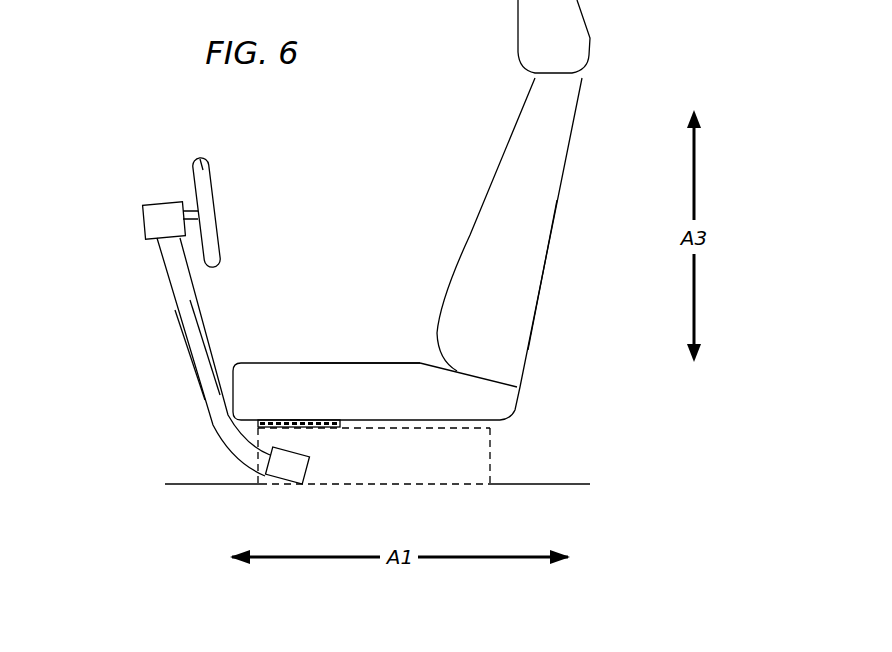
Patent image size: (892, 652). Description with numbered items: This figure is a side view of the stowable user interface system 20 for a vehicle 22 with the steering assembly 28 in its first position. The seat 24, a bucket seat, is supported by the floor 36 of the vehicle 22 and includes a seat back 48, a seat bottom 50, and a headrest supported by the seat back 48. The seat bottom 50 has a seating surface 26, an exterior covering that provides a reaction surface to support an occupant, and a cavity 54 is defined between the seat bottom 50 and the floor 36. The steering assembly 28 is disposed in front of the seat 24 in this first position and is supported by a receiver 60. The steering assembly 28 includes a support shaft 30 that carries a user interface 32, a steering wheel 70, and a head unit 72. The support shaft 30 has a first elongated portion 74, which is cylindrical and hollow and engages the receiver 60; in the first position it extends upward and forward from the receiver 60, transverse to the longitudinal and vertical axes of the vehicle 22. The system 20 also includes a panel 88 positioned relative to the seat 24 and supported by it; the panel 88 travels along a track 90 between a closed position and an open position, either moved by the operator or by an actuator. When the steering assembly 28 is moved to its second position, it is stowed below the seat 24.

The stowable user interface system 20 is at (83, 326).
The vehicle 22 is at (555, 485).
The seat 24 is at (500, 172).
The seating surface 26 is at (330, 363).
The steering assembly 28 is at (168, 272).
The support shaft 30 is at (197, 313).
The user interface 32 is at (206, 200).
The floor 36 is at (215, 485).
The seat back 48 is at (563, 190).
The seat bottom 50 is at (357, 363).
The cavity 54 is at (455, 465).
The receiver 60 is at (288, 467).
The steering wheel 70 is at (204, 161).
The head unit 72 is at (157, 212).
The first elongated portion 74 is at (180, 343).
The panel 88 is at (318, 428).
The track 90 is at (300, 419).